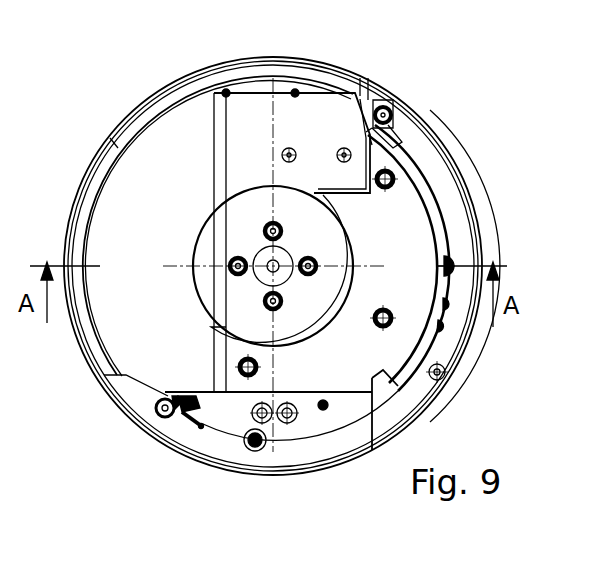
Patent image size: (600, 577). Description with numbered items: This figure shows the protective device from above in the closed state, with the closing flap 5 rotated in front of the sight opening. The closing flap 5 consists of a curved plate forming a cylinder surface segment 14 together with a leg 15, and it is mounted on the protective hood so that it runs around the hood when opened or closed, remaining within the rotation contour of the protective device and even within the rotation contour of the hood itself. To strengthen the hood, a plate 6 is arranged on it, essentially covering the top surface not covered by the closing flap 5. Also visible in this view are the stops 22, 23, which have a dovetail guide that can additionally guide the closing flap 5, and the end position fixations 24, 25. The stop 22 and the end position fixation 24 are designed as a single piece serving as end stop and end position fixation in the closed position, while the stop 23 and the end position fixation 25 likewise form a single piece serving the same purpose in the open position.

The closing flap 5 is at (425, 199).
The plate 6 is at (340, 120).
The cylinder surface segment 14 is at (447, 230).
The leg 15 is at (353, 362).
The stop 22 is at (388, 110).
The stop 23 is at (160, 404).
The end position fixation 24 is at (397, 137).
The end position fixation 25 is at (178, 413).